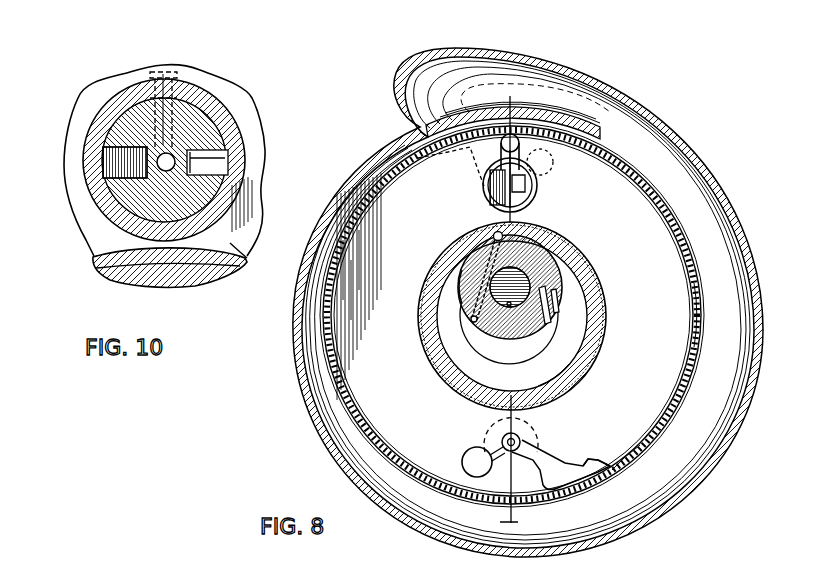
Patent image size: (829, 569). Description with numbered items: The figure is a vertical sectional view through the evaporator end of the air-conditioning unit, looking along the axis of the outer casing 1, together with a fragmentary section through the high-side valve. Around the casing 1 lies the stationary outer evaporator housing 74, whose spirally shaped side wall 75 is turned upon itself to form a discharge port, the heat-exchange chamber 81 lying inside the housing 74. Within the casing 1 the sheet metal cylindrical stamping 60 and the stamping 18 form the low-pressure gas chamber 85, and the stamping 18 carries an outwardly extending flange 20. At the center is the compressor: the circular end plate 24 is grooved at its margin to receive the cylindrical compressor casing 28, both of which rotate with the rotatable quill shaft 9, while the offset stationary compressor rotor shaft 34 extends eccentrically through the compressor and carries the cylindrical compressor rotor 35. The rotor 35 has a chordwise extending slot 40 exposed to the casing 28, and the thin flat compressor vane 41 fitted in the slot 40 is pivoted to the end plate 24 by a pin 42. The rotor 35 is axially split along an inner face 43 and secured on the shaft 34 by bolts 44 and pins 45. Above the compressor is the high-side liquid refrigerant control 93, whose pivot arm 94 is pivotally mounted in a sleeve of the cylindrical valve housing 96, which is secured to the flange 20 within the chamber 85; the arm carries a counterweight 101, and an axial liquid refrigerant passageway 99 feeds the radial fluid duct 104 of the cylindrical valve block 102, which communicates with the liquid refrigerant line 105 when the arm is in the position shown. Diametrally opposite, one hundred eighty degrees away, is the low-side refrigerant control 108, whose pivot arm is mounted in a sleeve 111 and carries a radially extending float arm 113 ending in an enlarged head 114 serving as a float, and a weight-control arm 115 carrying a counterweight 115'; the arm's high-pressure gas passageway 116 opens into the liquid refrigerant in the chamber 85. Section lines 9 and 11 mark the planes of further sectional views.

In FIG. 8, the cylindrical outer casing 1 is at (640, 177).
In FIG. 8, the rotatable quill shaft 9 is at (510, 96).
In FIG. 8, the section line 11- 11 is at (486, 404).
In FIG. 8, the sheet metal stamping 18 is at (668, 232).
In FIG. 8, the outwardly extending flange 20 is at (602, 298).
In FIG. 10, the outwardly extending flange 20 is at (237, 262).
In FIG. 8, the circular end plate 24 is at (575, 333).
In FIG. 8, the cylindrical compressor casing 28 is at (562, 263).
In FIG. 10, the cylindrical compressor casing 28 is at (202, 287).
In FIG. 8, the compressor rotor shaft 34 is at (515, 275).
In FIG. 8, the cylindrical compressor rotor 35 is at (472, 273).
In FIG. 8, the chordwise extending slot 40 is at (480, 303).
In FIG. 8, the compressor vane 41 is at (474, 316).
In FIG. 8, the pin 42 is at (495, 236).
In FIG. 8, the inner face 43 is at (560, 301).
In FIG. 8, the bolts 44 is at (553, 362).
In FIG. 8, the pins 45 is at (563, 285).
In FIG. 8, the sheet metal cylindrical stamping 60 is at (697, 330).
In FIG. 8, the outer cylindrical evaporator housing 74 is at (622, 77).
In FIG. 8, the spirally shaped side wall 75 is at (688, 482).
In FIG. 8, the heat-exchange chamber 81 is at (717, 403).
In FIG. 8, the low-pressure gas chamber 85 is at (673, 365).
In FIG. 10, the low-pressure gas chamber 85 is at (107, 85).
In FIG. 8, the high-side liquid refrigerant control 93 is at (484, 187).
In FIG. 10, the pivot arm 94 is at (190, 168).
In FIG. 8, the cylindrical valve housing 96 is at (537, 193).
In FIG. 10, the cylindrical valve housing 96 is at (222, 143).
In FIG. 10, the liquid refrigerant passageway 99 is at (170, 162).
In FIG. 8, the counterweight 101 is at (553, 158).
In FIG. 10, the cylindrical valve block 102 is at (228, 226).
In FIG. 10, the radial fluid duct 104 is at (220, 103).
In FIG. 10, the liquid refrigerant line 105 is at (180, 75).
In FIG. 8, the low-side refrigerant control 108 is at (622, 467).
In FIG. 8, the sleeve 111 is at (532, 437).
In FIG. 8, the float arm 113 is at (545, 457).
In FIG. 8, the enlarged head 114 is at (587, 460).
In FIG. 8, the weight-control arm 115 is at (482, 440).
In FIG. 8, the counterweight 115' is at (460, 461).
In FIG. 8, the high-pressure gas passageway 116 is at (507, 466).